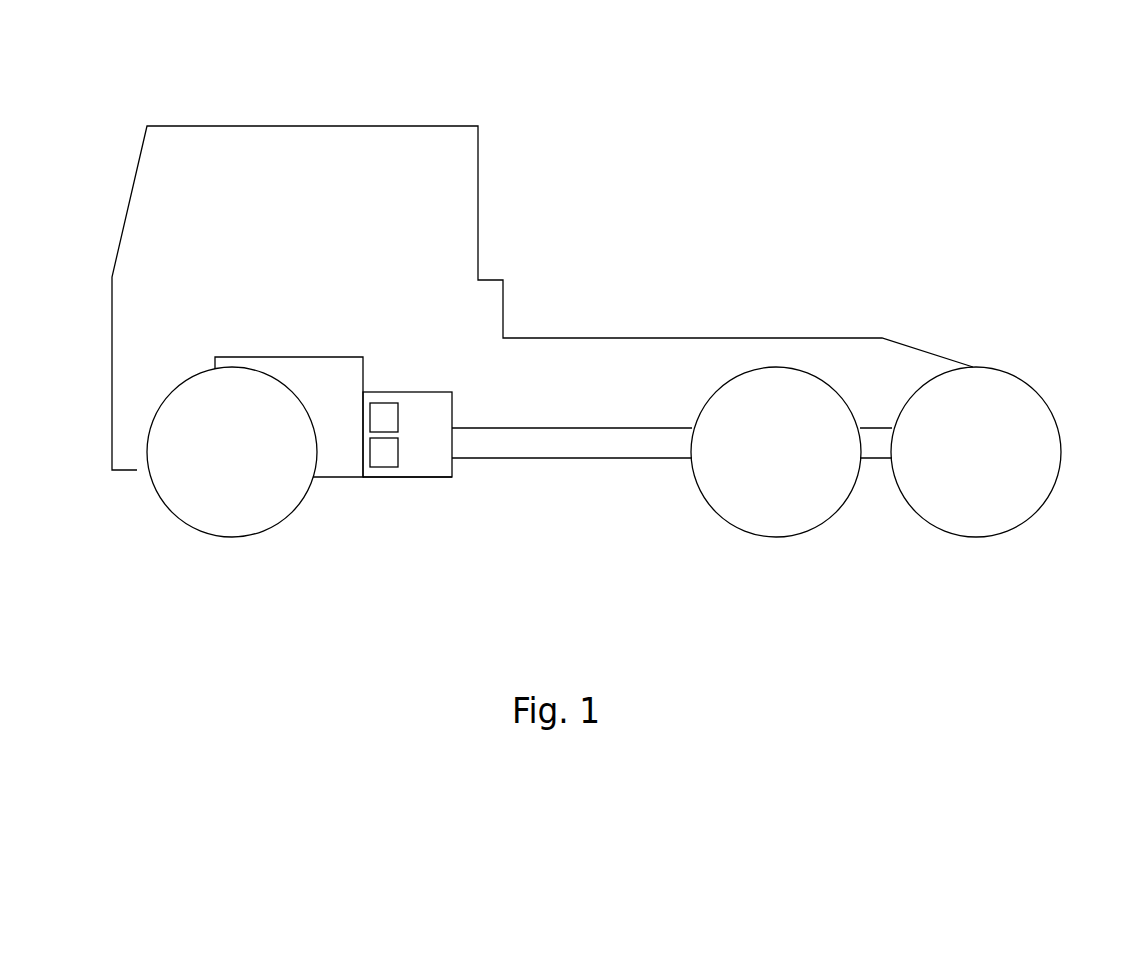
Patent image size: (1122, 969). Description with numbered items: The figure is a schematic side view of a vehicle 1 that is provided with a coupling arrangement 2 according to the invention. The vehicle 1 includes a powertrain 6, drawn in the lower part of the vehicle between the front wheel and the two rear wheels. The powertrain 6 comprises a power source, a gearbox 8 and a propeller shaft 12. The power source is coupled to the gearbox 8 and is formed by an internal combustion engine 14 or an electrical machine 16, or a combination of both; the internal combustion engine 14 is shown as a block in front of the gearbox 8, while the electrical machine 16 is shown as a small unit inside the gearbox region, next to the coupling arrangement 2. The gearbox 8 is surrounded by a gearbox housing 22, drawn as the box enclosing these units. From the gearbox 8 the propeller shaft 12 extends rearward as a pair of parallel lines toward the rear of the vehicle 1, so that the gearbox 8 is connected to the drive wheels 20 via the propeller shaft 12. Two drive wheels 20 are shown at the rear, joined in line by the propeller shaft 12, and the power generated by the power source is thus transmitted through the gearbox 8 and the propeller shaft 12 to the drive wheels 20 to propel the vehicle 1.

The vehicle 1 is at (585, 108).
The coupling arrangement 2 is at (385, 468).
The powertrain 6 is at (375, 568).
The gearbox 8 is at (408, 392).
The propeller shaft 12 is at (603, 458).
The internal combustion engine 14 is at (257, 358).
The electrical machine 16 is at (387, 402).
The drive wheels 20 is at (820, 522).
The gearbox housing 22 is at (402, 478).